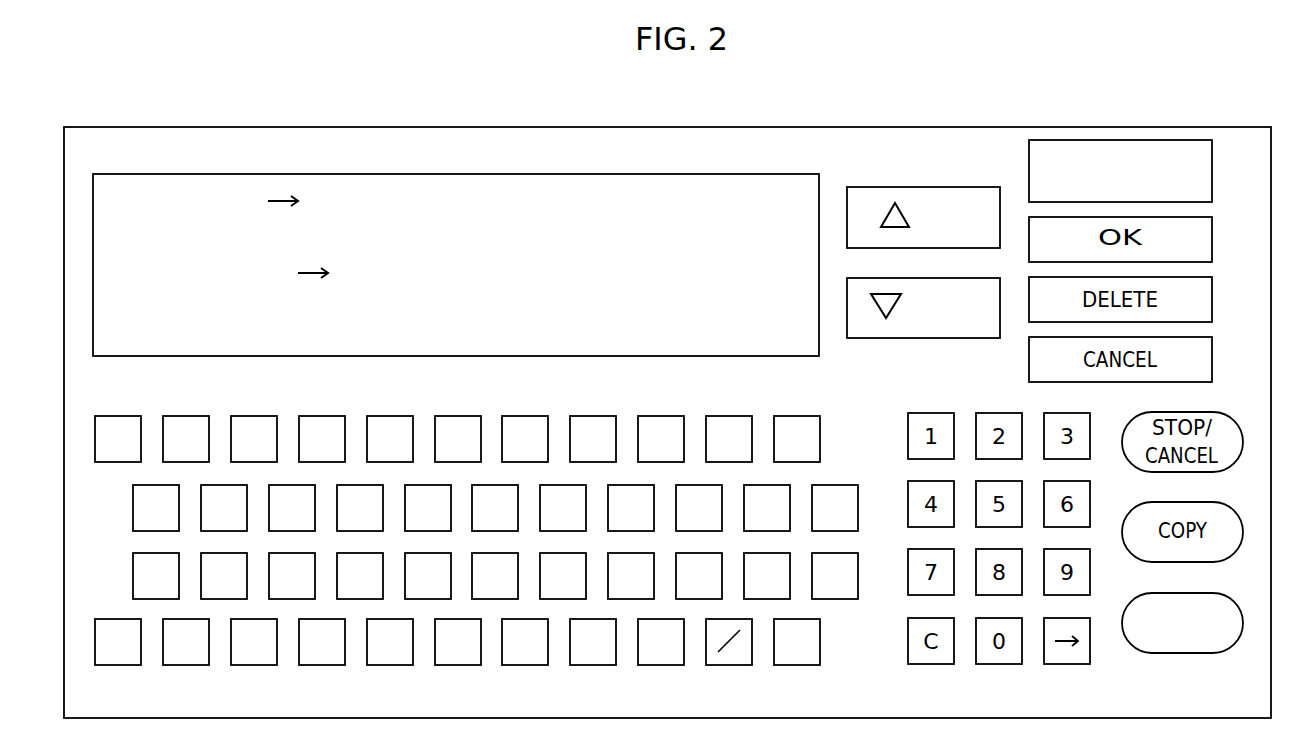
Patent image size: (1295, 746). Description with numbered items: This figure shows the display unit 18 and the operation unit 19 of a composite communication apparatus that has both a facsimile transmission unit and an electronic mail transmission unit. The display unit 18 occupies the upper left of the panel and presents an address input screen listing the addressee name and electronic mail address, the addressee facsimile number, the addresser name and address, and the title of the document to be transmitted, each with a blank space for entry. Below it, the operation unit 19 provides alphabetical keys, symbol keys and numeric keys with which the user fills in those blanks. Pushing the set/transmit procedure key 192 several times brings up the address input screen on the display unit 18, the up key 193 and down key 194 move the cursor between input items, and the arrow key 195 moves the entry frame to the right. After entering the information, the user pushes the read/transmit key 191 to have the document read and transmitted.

The display unit 18 is at (578, 179).
The operation unit 19 is at (622, 698).
The read/transmit key 191 is at (1163, 652).
The set/transmit procedure key 192 is at (1101, 141).
The up key 193 is at (907, 193).
The down key 194 is at (901, 284).
The arrow key 195 is at (1062, 651).